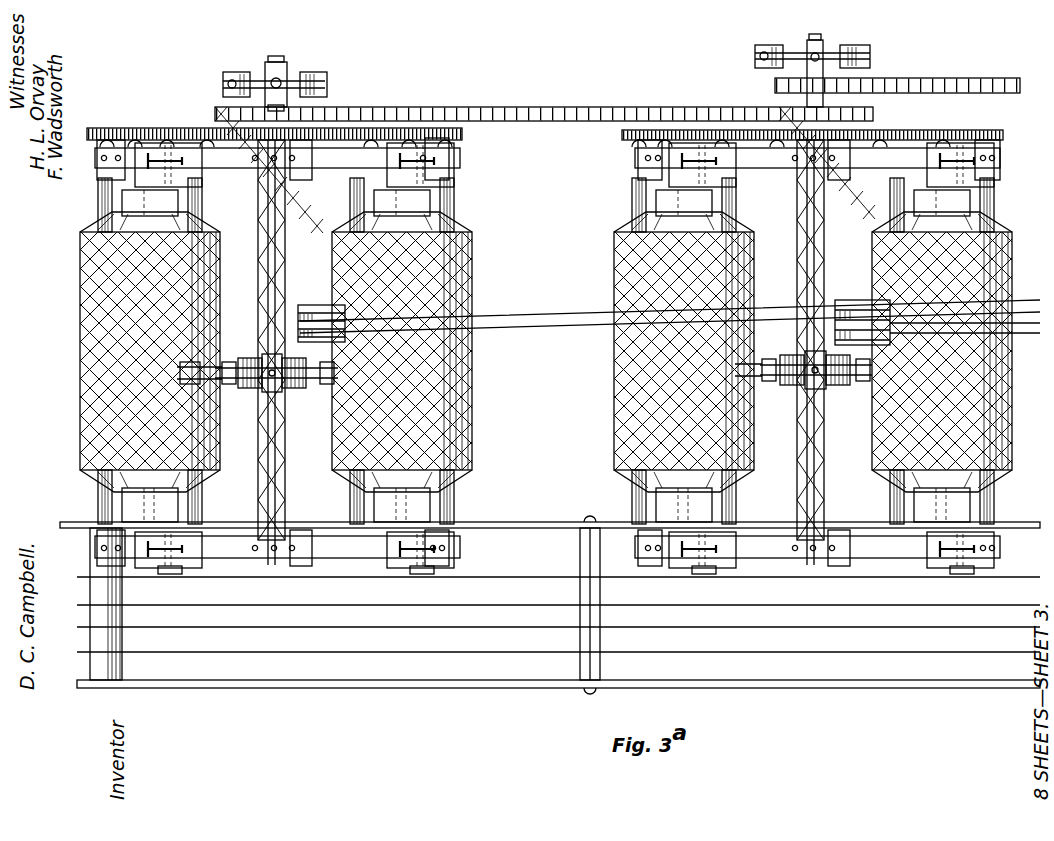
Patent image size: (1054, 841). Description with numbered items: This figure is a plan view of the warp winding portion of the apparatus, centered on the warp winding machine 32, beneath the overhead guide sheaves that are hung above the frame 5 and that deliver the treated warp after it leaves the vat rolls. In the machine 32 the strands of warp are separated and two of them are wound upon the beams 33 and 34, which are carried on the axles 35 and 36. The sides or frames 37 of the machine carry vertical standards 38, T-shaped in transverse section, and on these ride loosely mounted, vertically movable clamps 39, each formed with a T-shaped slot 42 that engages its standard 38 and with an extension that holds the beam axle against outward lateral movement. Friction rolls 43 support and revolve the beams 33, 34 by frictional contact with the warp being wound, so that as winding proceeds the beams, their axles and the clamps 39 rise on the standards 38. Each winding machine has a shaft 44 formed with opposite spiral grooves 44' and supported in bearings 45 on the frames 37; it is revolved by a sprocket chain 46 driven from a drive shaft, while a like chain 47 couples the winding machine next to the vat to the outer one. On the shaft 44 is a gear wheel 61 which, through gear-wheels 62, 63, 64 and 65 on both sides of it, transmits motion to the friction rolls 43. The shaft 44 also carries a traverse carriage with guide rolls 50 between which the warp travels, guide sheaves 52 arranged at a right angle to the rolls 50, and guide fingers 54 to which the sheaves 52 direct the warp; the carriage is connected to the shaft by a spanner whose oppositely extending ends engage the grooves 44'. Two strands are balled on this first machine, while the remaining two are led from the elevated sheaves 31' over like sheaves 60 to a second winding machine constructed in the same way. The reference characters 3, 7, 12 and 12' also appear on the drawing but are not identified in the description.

The frame 3 is at (589, 585).
The frame 5 is at (498, 522).
The post 7 is at (110, 590).
The wire 12 is at (654, 452).
The wire 12' is at (670, 330).
The elevated sheaves 31' is at (862, 311).
The warp winding machine 32 is at (172, 128).
The beam 33 is at (996, 494).
The beam 34 is at (738, 500).
The axle 35 is at (994, 192).
The axle 36 is at (652, 192).
The sides or frames 37 is at (322, 163).
The vertical standards 38 is at (220, 186).
The vertically movable clamps 39 is at (135, 192).
The T-shaped slot 42 is at (916, 584).
The friction rolls 43 is at (202, 214).
The shaft 44 is at (543, 340).
The spiral grooves 44' is at (523, 352).
The bearings 45 is at (296, 160).
The sprocket chain 46 is at (897, 73).
The chain 47 is at (545, 108).
The guide rolls 50 is at (262, 392).
The guide sheaves 52 is at (255, 362).
The guide fingers 54 is at (250, 380).
The sheaves 60 is at (318, 308).
The gear wheel 61 is at (273, 143).
The gear-wheel 62 is at (207, 128).
The gear-wheel 63 is at (182, 128).
The gear-wheel 64 is at (135, 128).
The gear-wheel 65 is at (107, 128).